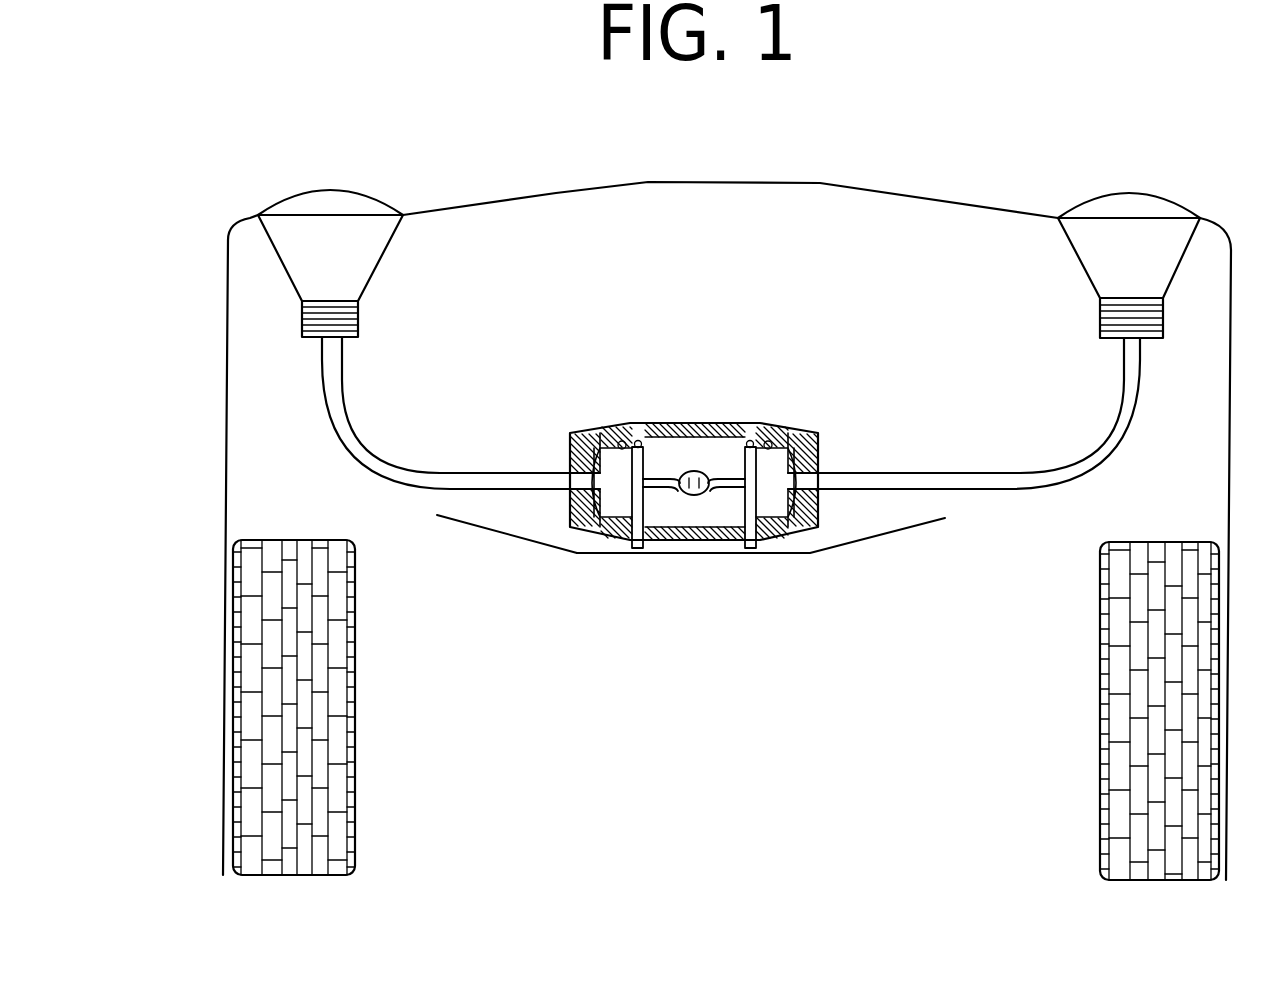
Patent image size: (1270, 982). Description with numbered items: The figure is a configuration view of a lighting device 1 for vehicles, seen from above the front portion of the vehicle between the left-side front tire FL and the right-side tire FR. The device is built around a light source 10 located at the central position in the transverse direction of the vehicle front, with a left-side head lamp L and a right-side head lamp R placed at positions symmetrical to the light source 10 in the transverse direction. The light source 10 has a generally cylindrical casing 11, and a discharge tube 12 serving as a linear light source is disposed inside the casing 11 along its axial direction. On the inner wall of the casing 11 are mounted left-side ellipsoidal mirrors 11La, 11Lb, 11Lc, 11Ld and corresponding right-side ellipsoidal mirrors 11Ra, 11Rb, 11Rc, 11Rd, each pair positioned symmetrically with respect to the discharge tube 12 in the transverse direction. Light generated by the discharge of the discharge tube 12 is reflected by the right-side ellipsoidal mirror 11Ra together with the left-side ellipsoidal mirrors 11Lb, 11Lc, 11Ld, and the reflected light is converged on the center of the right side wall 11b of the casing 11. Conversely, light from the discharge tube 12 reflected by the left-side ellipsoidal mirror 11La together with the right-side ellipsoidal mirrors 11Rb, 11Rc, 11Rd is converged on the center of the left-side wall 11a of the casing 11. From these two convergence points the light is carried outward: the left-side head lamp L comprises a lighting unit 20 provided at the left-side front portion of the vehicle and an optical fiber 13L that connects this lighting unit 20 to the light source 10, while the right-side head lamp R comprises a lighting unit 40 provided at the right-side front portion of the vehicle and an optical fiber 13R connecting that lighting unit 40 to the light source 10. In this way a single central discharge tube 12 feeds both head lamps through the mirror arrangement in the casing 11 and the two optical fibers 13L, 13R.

The lighting device for vehicles 1 is at (710, 688).
The light source 10 is at (776, 390).
The casing 11 is at (695, 423).
The left-side wall 11a is at (567, 503).
The right side wall 11b is at (825, 518).
The left-side ellipsoidal mirror 11La is at (660, 540).
The left-side ellipsoidal mirror 11Lb is at (672, 423).
The left-side ellipsoidal mirror 11Lc is at (637, 423).
The left-side ellipsoidal mirror 11Ld is at (593, 428).
The right-side ellipsoidal mirror 11Ra is at (724, 540).
The right-side ellipsoidal mirror 11Rb is at (720, 423).
The right-side ellipsoidal mirror 11Rc is at (760, 423).
The right-side ellipsoidal mirror 11Rd is at (817, 456).
The discharge tube 12 is at (700, 540).
The optical fiber 13L is at (397, 455).
The optical fiber 13R is at (1097, 455).
The lighting unit 20 is at (398, 230).
The lighting unit 40 is at (1070, 248).
The left-side head lamp L is at (397, 188).
The right-side head lamp R is at (1081, 184).
The left-side front tire FL is at (355, 797).
The right-side tire FR is at (1099, 798).